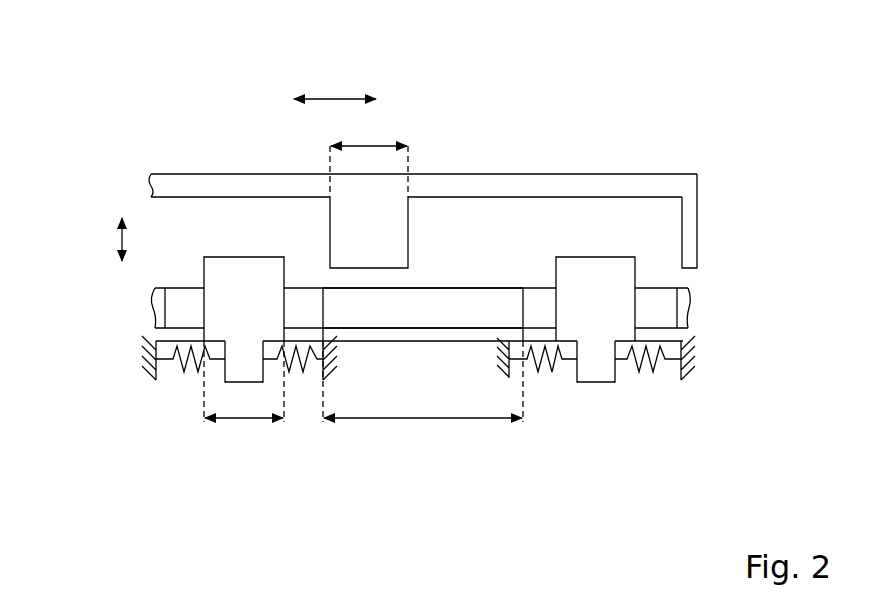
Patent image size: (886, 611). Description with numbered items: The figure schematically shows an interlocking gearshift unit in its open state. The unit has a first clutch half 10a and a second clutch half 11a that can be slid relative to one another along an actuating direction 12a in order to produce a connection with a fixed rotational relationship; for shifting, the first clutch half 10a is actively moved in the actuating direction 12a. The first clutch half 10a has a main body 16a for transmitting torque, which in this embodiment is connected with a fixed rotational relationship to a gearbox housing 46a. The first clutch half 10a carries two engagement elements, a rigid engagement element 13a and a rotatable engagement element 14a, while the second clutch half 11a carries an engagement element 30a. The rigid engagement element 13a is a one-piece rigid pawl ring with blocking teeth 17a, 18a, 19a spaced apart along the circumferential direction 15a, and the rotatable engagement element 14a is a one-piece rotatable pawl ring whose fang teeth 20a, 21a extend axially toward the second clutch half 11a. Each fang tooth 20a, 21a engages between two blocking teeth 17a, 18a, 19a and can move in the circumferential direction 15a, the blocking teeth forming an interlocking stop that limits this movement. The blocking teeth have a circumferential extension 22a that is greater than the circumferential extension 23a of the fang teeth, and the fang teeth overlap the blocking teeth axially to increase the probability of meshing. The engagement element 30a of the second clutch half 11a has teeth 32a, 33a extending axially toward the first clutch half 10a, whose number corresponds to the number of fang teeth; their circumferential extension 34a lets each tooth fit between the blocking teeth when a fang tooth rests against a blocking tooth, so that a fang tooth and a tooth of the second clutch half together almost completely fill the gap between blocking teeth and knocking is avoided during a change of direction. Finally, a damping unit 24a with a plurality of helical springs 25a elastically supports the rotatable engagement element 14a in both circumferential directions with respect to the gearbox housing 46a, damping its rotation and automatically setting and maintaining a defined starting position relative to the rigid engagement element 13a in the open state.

The first clutch half 10a is at (459, 291).
The second clutch half 11a is at (482, 188).
The actuating direction 12a is at (118, 242).
The rigid engagement element 13a is at (462, 291).
The rotatable engagement element 14a is at (348, 333).
The circumferential direction 15a is at (336, 97).
The main body 16a is at (497, 312).
The blocking tooth 17a is at (497, 273).
The blocking tooth 18a is at (162, 278).
The blocking tooth 19a is at (677, 280).
The fang tooth 20a is at (245, 250).
The fang tooth 21a is at (618, 248).
The circumferential extension of the blocking teeth 22a is at (485, 422).
The circumferential extension of the fang teeth 23a is at (242, 422).
The damping unit 24a is at (86, 397).
The spring 25a is at (181, 366).
The engagement element 30a is at (253, 187).
The tooth 32a is at (413, 205).
The tooth 33a is at (702, 252).
The circumferential extension of the teeth 34a is at (370, 145).
The gearbox housing 46a is at (138, 350).